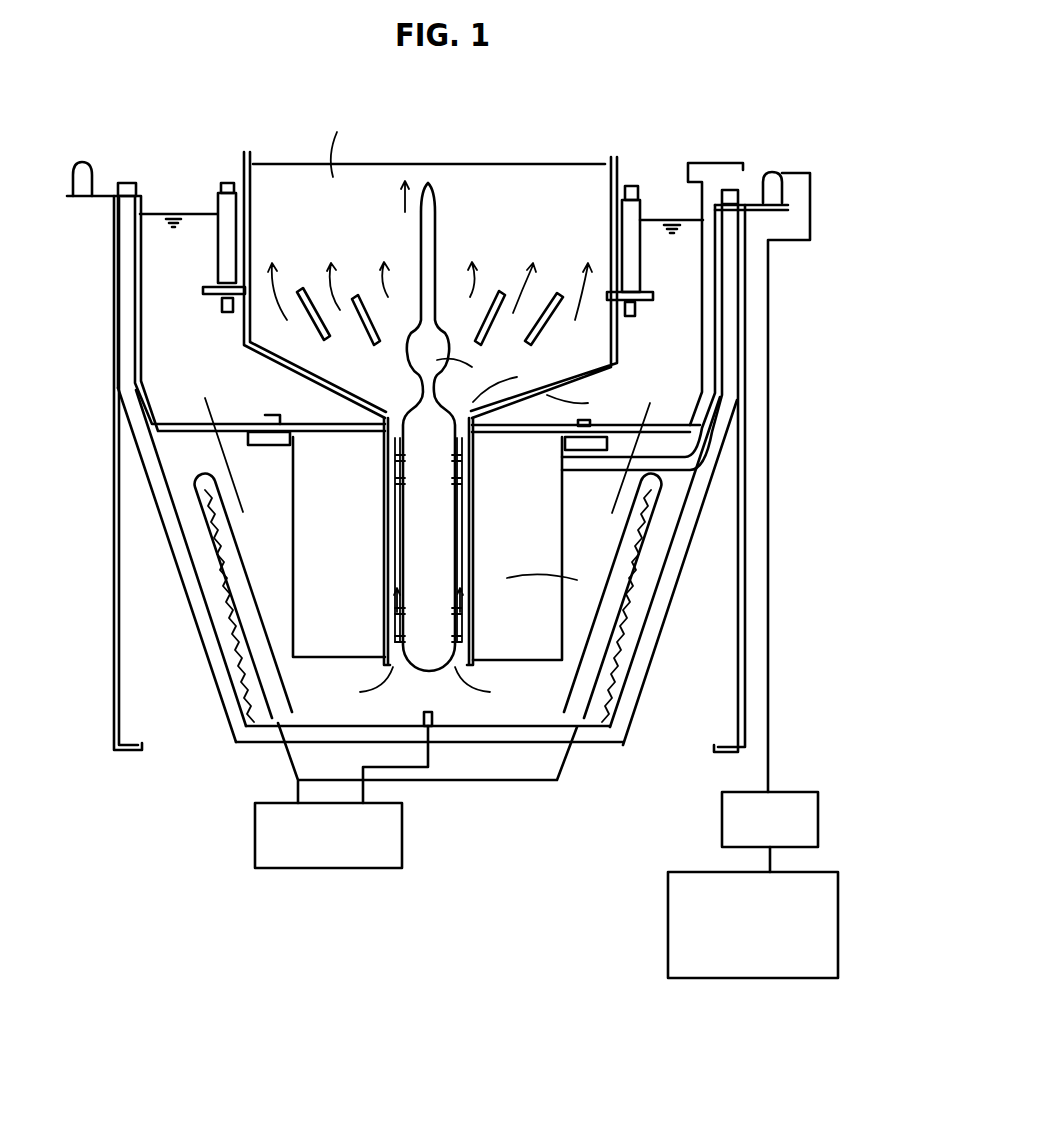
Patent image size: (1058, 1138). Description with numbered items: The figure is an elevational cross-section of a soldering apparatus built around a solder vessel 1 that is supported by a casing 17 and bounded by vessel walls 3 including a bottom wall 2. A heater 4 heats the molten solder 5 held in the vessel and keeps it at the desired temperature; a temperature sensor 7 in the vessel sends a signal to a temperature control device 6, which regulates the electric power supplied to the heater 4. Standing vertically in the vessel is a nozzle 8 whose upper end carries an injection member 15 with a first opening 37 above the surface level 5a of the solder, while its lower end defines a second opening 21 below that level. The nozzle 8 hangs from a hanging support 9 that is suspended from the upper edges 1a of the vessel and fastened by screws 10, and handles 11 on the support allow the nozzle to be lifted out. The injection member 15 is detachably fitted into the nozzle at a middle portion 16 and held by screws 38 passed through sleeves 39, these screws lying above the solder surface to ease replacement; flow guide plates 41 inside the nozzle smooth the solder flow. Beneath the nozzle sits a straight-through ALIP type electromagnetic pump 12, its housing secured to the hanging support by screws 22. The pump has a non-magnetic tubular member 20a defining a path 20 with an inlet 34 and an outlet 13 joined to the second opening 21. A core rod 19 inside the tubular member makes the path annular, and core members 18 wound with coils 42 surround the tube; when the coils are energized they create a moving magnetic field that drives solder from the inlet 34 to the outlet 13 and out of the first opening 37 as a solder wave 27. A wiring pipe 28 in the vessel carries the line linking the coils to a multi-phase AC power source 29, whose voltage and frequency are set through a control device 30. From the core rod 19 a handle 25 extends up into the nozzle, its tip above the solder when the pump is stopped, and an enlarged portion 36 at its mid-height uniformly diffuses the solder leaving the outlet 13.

The solder vessel 1 is at (595, 740).
The upper edges 1a is at (115, 250).
The bottom wall 2 is at (263, 742).
The vessel walls 3 is at (170, 548).
The heater 4 is at (230, 605).
The molten solder 5 is at (690, 357).
The surface level 5a is at (662, 220).
The temperature control device 6 is at (320, 868).
The temperature sensor 7 is at (432, 716).
The nozzle 8 is at (576, 404).
The hanging support 9 is at (143, 325).
The screws 10 is at (125, 183).
The handles 11 is at (82, 160).
The ALIP type electromagnetic pump 12 is at (293, 508).
The outlet 13 is at (397, 410).
The injection member 15 is at (240, 153).
The middle portion 16 is at (613, 368).
The casing 17 is at (113, 668).
The core members 18 is at (563, 545).
The core rod 19 is at (412, 497).
The path 20 is at (397, 563).
The non-magnetic tubular member 20a is at (473, 498).
The second opening 21 is at (508, 382).
The screws 22 is at (582, 450).
The handle 25 is at (437, 217).
The solder wave 27 is at (405, 165).
The wiring pipe 28 is at (708, 295).
The multi-phase AC power source 29 is at (805, 792).
The control device 30 is at (693, 872).
The inlet 34 is at (455, 668).
The enlarged portion 36 is at (468, 365).
The first opening 37 is at (336, 142).
The screws 38 is at (228, 182).
The sleeves 39 is at (217, 225).
The flow guide plates 41 is at (320, 337).
The coils 42 is at (555, 579).